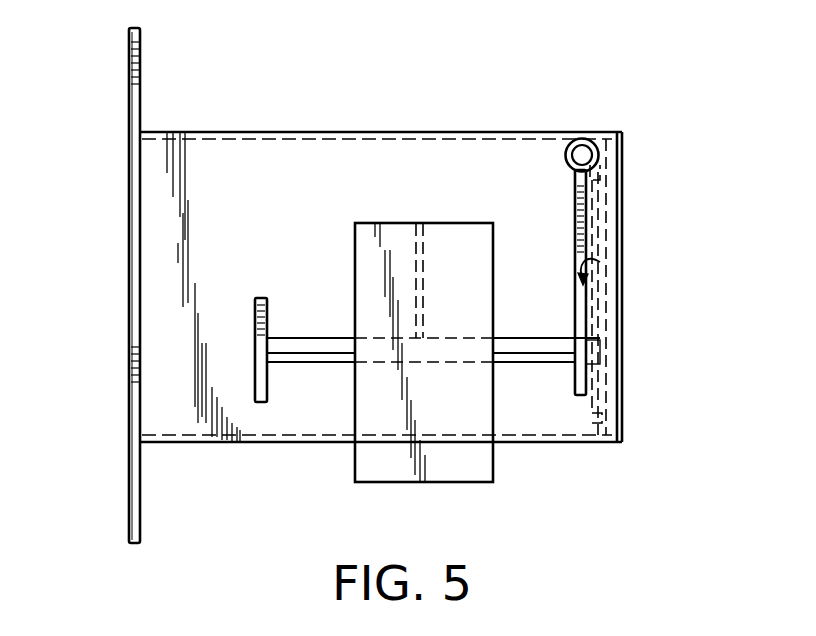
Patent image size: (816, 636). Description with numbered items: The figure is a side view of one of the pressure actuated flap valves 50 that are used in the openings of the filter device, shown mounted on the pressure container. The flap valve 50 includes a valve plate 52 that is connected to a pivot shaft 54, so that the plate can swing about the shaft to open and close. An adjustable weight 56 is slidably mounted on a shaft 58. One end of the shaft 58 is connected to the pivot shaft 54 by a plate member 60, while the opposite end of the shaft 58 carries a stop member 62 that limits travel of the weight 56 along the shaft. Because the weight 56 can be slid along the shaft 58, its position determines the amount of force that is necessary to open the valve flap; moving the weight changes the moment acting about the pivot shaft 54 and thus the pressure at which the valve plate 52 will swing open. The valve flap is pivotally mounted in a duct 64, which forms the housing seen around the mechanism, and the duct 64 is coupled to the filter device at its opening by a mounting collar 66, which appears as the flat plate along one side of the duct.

The pressure actuated flap valve 50 is at (374, 106).
The valve plate 52 is at (605, 264).
The pivot shaft 54 is at (583, 139).
The adjustable weight 56 is at (353, 458).
The shaft 58 is at (534, 367).
The plate member 60 is at (575, 226).
The stop member 62 is at (255, 310).
The duct 64 is at (215, 443).
The mounting collar 66 is at (128, 485).